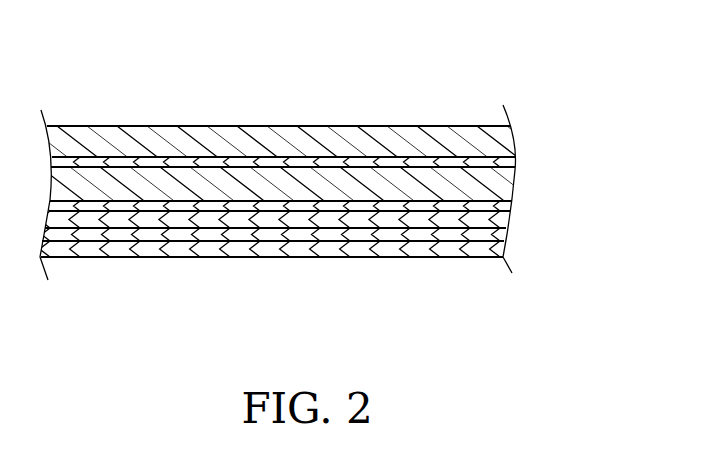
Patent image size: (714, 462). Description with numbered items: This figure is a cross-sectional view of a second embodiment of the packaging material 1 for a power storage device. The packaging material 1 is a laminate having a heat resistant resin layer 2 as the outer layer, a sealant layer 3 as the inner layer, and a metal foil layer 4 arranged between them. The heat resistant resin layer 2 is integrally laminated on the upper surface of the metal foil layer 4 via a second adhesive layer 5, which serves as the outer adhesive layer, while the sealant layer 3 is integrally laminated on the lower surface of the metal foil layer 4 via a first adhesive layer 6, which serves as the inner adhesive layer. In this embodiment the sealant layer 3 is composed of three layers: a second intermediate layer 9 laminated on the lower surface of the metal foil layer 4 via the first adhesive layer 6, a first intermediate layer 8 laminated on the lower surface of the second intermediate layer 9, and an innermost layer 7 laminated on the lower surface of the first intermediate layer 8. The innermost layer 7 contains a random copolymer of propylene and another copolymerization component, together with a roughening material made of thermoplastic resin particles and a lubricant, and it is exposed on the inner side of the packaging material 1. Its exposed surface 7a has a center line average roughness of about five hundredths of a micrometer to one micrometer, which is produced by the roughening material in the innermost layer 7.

The laminated film 1 is at (457, 72).
The first layer 2 is at (505, 140).
The multilayer unit 3 is at (345, 281).
The second layer 4 is at (505, 187).
The intermediate layer 5 is at (508, 162).
The bonding layer 6 is at (505, 205).
The bottom layer 7 is at (325, 296).
The lower surface of bottom layer 7a is at (307, 257).
The middle layer 8 is at (495, 233).
The upper layer of unit 9 is at (497, 218).